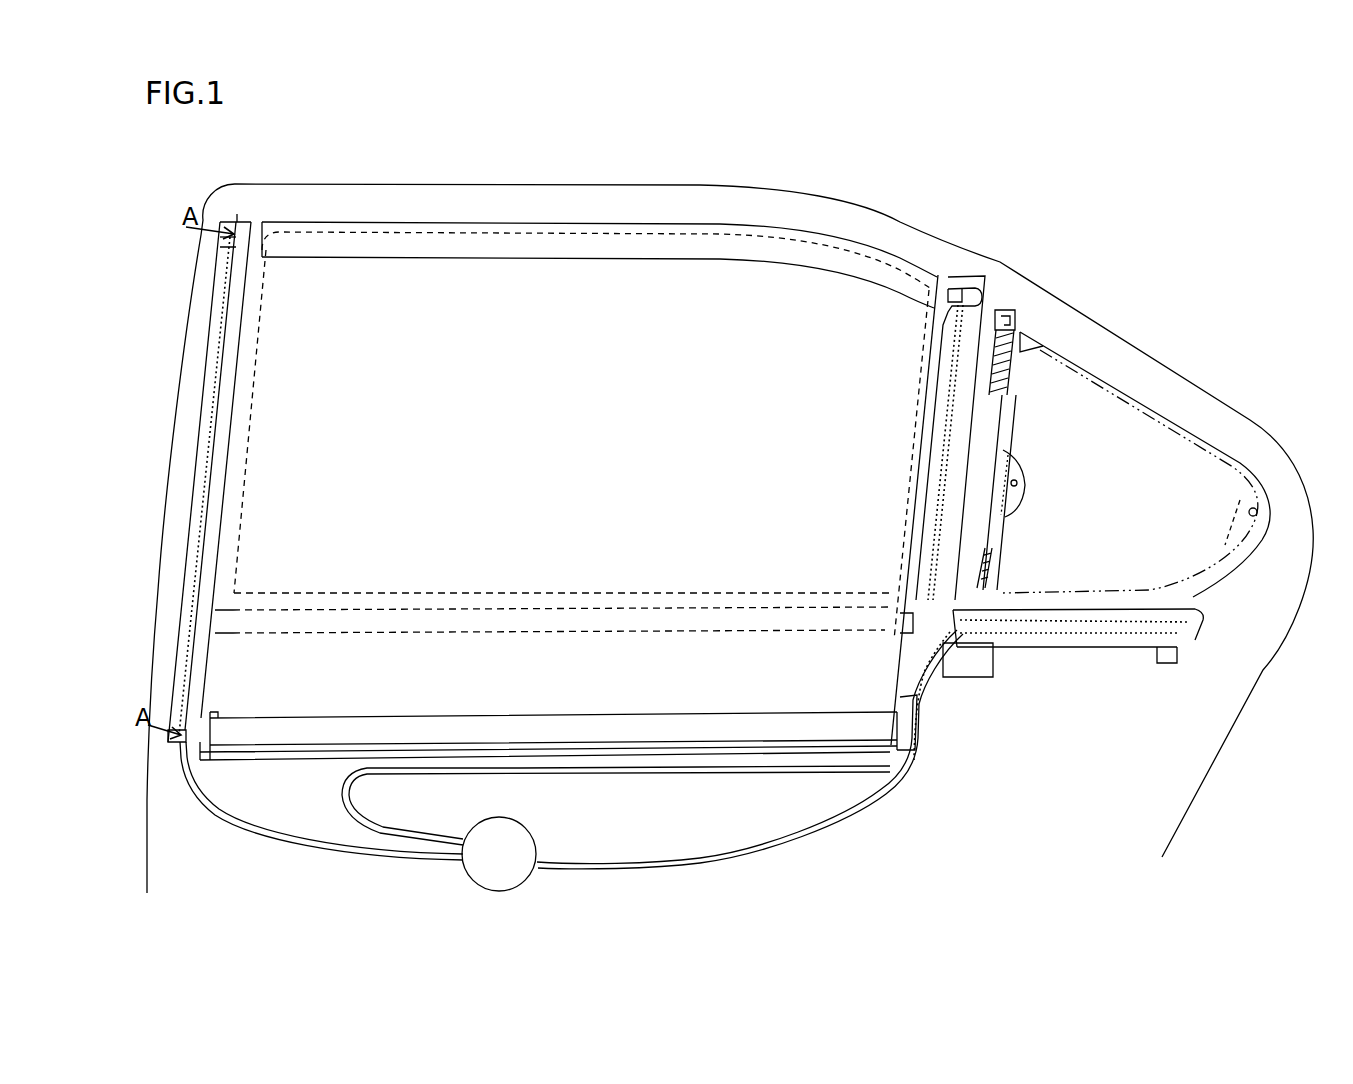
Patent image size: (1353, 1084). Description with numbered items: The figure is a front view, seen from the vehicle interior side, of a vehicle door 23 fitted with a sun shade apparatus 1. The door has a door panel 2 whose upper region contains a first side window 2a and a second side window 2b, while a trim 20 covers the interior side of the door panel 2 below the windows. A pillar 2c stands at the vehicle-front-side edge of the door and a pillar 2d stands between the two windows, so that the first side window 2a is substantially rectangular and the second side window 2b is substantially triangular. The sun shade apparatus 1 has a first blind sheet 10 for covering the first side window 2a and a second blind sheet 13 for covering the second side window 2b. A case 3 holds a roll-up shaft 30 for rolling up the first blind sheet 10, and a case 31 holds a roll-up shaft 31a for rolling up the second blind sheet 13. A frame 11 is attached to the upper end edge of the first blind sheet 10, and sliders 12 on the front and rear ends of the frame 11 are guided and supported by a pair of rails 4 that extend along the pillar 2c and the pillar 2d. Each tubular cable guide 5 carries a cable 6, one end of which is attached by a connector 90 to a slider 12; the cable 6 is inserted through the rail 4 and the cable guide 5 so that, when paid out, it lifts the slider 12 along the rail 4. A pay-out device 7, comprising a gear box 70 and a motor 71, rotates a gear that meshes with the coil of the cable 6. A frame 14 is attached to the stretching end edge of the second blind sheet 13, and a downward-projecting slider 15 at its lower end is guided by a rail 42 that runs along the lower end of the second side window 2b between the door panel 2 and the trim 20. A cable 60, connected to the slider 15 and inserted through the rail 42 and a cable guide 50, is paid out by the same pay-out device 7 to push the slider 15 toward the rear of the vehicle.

The sun shade apparatus 1 is at (330, 877).
The door panel 2 is at (147, 765).
The first side window 2a is at (525, 232).
The second side window 2b is at (1170, 442).
The pillar 2c is at (190, 343).
The pillar (division frame) 2d is at (1025, 352).
The case 3 is at (508, 690).
The roll-up shaft 30 is at (245, 745).
The rail 4 is at (215, 422).
The cable guide 5 is at (567, 769).
The cable 6 is at (897, 860).
The pay-out device 7 is at (489, 877).
The gear box 70 is at (501, 877).
The motor 71 is at (463, 870).
The first blind sheet 10 is at (451, 275).
The frame 11 is at (372, 222).
The slider 12 is at (255, 238).
The second blind sheet 13 is at (1005, 413).
The frame 14 is at (1013, 540).
The slider 15 is at (997, 637).
The trim 20 is at (270, 889).
The vehicle door 23 is at (175, 229).
The case 31 is at (986, 276).
The roll-up shaft 31a is at (1007, 318).
The rail 42 is at (1063, 623).
The cable guide 50 is at (616, 848).
The cable 60 is at (672, 775).
The connector 90 is at (215, 253).